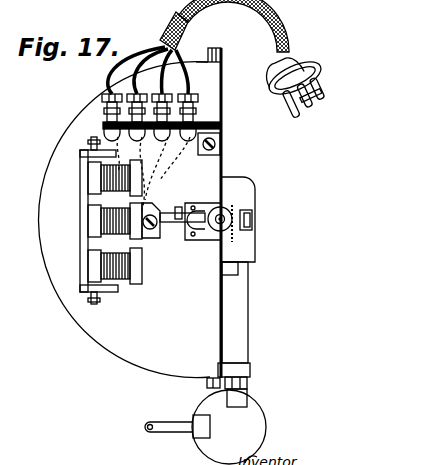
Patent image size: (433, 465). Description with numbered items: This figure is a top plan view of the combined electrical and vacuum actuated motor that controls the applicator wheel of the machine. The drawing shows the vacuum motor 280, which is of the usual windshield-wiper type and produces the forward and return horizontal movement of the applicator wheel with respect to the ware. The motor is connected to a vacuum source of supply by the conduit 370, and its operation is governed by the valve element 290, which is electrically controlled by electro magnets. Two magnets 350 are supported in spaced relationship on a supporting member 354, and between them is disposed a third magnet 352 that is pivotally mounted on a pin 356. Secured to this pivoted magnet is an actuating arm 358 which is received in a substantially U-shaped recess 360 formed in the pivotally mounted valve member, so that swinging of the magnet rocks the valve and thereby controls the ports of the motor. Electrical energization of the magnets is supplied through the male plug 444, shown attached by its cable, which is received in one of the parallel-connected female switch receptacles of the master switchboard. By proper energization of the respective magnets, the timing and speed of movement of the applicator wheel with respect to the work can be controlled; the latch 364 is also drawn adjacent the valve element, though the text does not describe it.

The male plug 444 is at (303, 64).
The vacuum motor 280 is at (123, 330).
The valve element 290 is at (226, 208).
The magnets 350 is at (95, 180).
The magnet 352 is at (95, 222).
The supporting member 354 is at (89, 147).
The pin 356 is at (148, 238).
The actuating arm 358 is at (180, 207).
The U-shaped recess 360 is at (185, 240).
The latch 364 is at (253, 219).
The conduit 370 is at (170, 419).